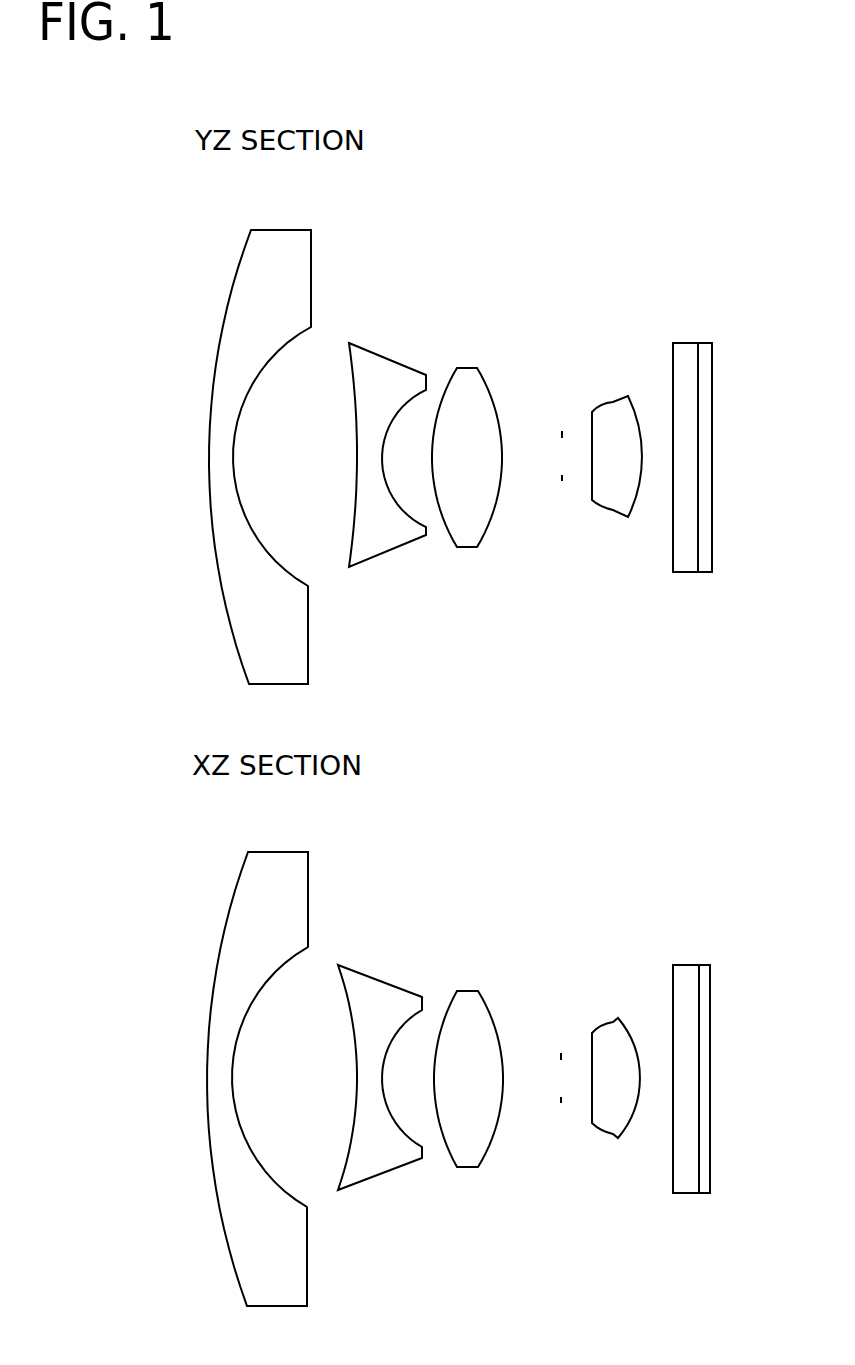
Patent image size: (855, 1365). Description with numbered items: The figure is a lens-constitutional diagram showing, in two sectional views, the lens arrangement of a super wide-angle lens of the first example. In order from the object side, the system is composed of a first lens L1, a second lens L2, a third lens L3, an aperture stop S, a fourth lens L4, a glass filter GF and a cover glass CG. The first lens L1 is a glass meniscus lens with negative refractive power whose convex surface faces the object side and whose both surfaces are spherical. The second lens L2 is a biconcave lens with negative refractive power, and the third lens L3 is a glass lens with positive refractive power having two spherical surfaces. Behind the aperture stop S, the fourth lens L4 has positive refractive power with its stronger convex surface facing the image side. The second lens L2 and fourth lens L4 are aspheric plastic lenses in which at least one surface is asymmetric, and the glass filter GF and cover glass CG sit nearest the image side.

The first lens L1 is at (282, 230).
The second lens L2 is at (393, 359).
The third lens L3 is at (471, 368).
The fourth lens L4 is at (614, 401).
The aperture stop S is at (561, 430).
The glass filter GF is at (688, 340).
The cover glass CG is at (705, 340).